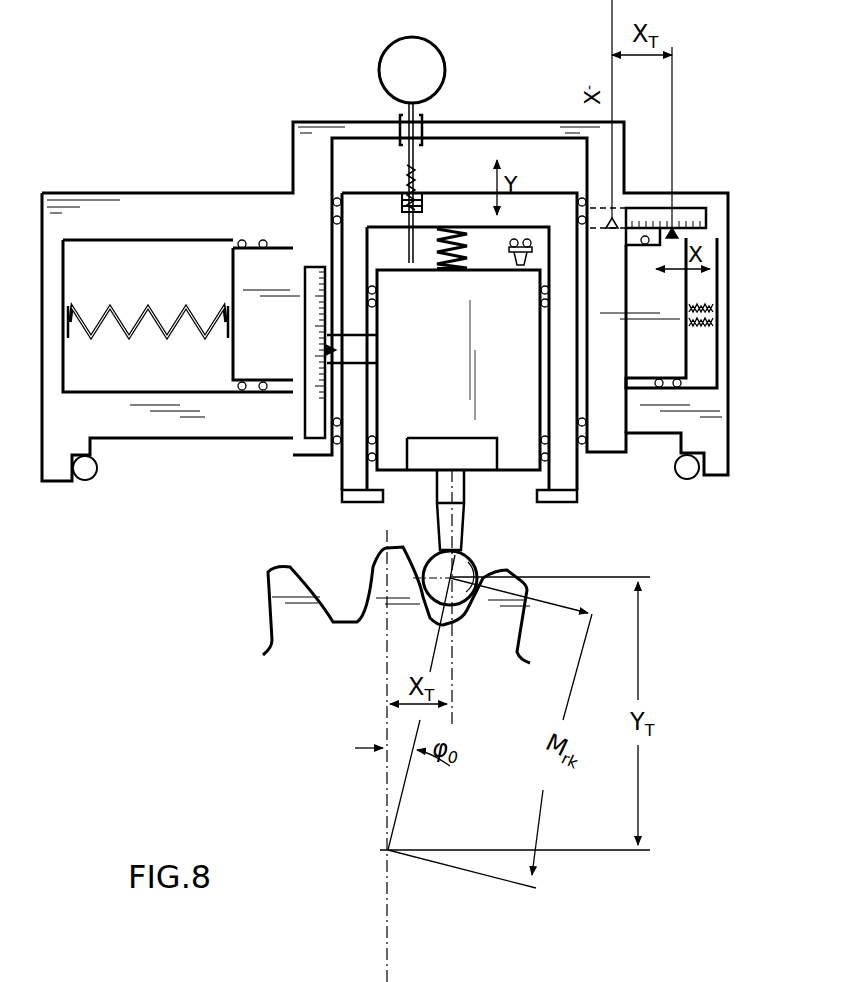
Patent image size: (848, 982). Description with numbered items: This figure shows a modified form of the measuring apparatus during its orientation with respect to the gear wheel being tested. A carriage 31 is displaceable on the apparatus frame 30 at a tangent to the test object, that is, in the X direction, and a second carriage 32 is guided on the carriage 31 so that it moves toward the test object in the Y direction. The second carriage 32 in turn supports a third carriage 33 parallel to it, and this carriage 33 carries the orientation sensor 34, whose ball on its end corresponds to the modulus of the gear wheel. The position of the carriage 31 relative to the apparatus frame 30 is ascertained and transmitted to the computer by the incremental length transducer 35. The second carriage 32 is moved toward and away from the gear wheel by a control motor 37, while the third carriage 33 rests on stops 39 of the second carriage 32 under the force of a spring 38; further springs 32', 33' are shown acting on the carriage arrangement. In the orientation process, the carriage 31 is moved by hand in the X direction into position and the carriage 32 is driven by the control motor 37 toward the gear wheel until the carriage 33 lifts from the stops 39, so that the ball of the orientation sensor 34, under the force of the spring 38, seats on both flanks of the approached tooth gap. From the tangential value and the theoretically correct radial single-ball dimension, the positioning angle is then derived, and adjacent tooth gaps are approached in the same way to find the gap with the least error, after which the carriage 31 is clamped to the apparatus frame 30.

The apparatus frame 30 is at (133, 207).
The carriage 31 is at (246, 272).
The second carriage 32 is at (445, 320).
The spring 32' is at (148, 296).
The third carriage 33 is at (458, 476).
The spring 33' is at (699, 317).
The orientation sensor 34 is at (477, 560).
The incremental length transducer 35 is at (649, 216).
The control motor 37 is at (434, 62).
The spring 38 is at (455, 225).
The stops 39 is at (354, 498).